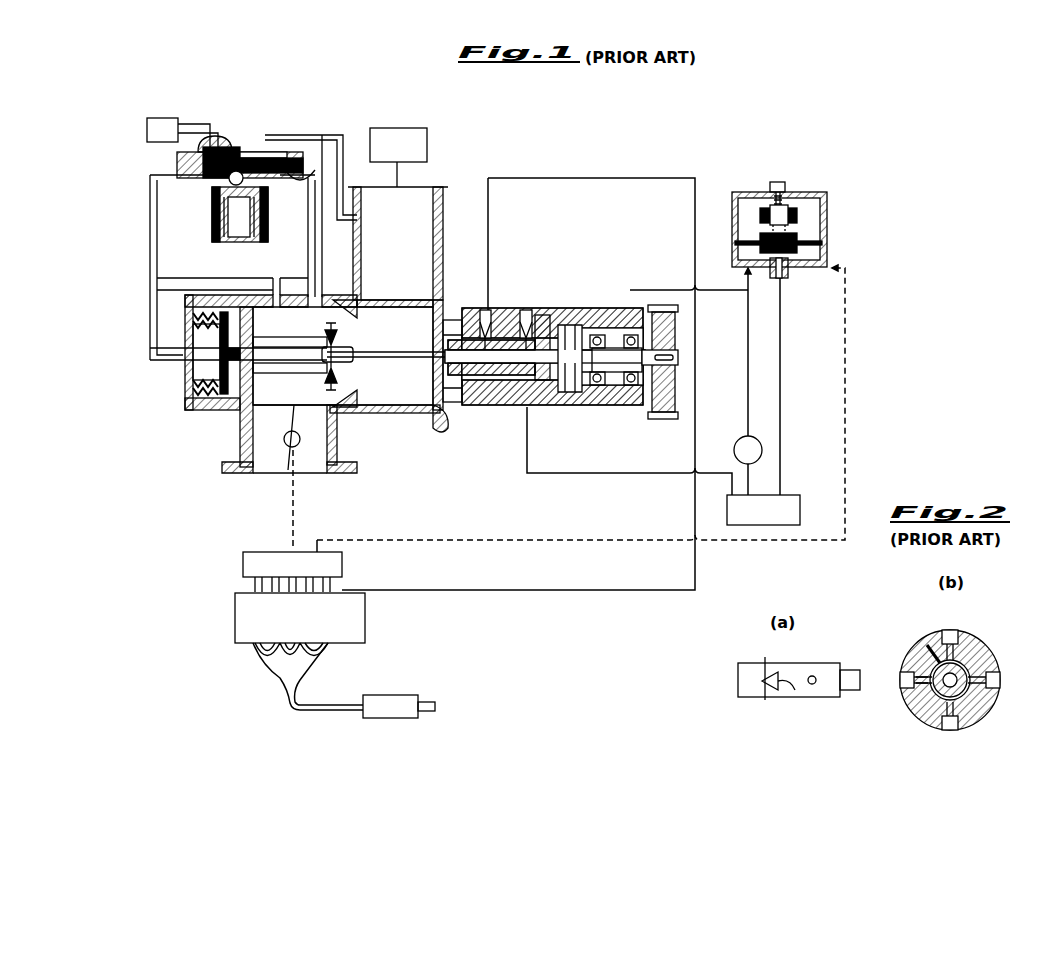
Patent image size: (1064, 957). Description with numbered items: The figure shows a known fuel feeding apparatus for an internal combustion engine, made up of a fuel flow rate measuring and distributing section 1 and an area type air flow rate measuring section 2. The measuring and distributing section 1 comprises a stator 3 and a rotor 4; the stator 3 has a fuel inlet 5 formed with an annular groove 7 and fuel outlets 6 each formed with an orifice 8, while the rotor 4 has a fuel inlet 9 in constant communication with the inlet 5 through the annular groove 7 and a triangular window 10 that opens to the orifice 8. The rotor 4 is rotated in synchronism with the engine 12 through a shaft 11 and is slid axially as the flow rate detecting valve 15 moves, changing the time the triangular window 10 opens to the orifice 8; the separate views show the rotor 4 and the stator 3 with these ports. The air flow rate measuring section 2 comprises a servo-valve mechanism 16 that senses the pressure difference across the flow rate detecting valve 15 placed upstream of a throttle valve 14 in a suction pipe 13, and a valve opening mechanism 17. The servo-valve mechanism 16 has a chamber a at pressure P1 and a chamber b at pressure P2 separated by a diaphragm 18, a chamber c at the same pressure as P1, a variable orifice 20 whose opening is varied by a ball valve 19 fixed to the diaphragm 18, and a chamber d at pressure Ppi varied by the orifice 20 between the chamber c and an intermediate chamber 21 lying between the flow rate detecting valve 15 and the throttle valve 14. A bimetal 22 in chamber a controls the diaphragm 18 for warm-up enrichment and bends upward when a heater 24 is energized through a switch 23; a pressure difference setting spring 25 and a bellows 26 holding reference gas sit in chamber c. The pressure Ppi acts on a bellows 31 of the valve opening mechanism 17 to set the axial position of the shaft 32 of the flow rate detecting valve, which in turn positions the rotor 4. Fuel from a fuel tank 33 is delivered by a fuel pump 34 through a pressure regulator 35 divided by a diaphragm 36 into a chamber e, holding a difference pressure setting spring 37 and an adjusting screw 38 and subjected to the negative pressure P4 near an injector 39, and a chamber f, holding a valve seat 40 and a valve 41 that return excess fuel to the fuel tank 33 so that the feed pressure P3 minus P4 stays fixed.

In FIG. 1, the fuel flow rate measuring and distributing section 1 is at (502, 412).
In FIG. 1, the area type air flow rate measuring section 2 is at (180, 448).
In FIG. 1, the stator 3 is at (624, 405).
In FIG. 2, the stator 3 is at (990, 650).
In FIG. 1, the rotor 4 is at (482, 378).
In FIG. 2, the rotor 4 is at (822, 668).
In FIG. 1, the fuel inlet 5 is at (518, 335).
In FIG. 1, the fuel outlets 6 is at (486, 335).
In FIG. 2, the fuel outlets 6 is at (952, 632).
In FIG. 1, the annular groove 7 is at (540, 330).
In FIG. 1, the orifice 8 is at (500, 333).
In FIG. 2, the orifice 8 is at (760, 695).
In FIG. 1, the fuel inlet 9 is at (557, 380).
In FIG. 2, the fuel inlet 9 is at (815, 690).
In FIG. 1, the triangular window 10 is at (462, 335).
In FIG. 2, the triangular window 10 is at (790, 690).
In FIG. 1, the shaft 11 is at (610, 360).
In FIG. 1, the engine 12 is at (238, 615).
In FIG. 1, the suction pipe 13 is at (392, 412).
In FIG. 1, the throttle valve 14 is at (290, 455).
In FIG. 1, the flow rate detecting valve 15 is at (338, 333).
In FIG. 1, the servo-valve mechanism 16 is at (250, 122).
In FIG. 1, the valve opening mechanism 17 is at (170, 378).
In FIG. 1, the diaphragm 18 is at (283, 177).
In FIG. 1, the ball valve 19 is at (231, 150).
In FIG. 1, the variable orifice 20 is at (268, 202).
In FIG. 1, the intermediate chamber 21 is at (298, 282).
In FIG. 1, the bimetal 22 is at (195, 150).
In FIG. 1, the switch 23 is at (147, 125).
In FIG. 1, the heater 24 is at (218, 145).
In FIG. 1, the pressure difference setting spring 25 is at (212, 220).
In FIG. 1, the bellows 26 is at (212, 238).
In FIG. 1, the bellows 31 is at (212, 410).
In FIG. 1, the shaft 32 is at (393, 364).
In FIG. 1, the fuel tank 33 is at (800, 512).
In FIG. 1, the fuel pump 34 is at (742, 448).
In FIG. 1, the pressure regulator 35 is at (832, 186).
In FIG. 1, the diaphragm 36 is at (832, 248).
In FIG. 1, the difference pressure setting spring 37 is at (768, 232).
In FIG. 1, the adjusting screw 38 is at (778, 182).
In FIG. 1, the injector 39 is at (325, 592).
In FIG. 1, the valve seat 40 is at (790, 262).
In FIG. 1, the valve 41 is at (771, 272).
In FIG. 1, the chamber a is at (280, 160).
In FIG. 1, the chamber b is at (311, 177).
In FIG. 1, the chamber c is at (268, 223).
In FIG. 1, the chamber d is at (212, 185).
In FIG. 1, the chamber e is at (812, 212).
In FIG. 1, the chamber f is at (813, 258).
In FIG. 1, the pressure P1 is at (398, 214).
In FIG. 1, the pressure P2 is at (292, 393).
In FIG. 1, the feed pressure P3 is at (546, 284).
In FIG. 1, the negative pressure P4 is at (393, 411).
In FIG. 1, the pressure Pn Ppi is at (207, 355).